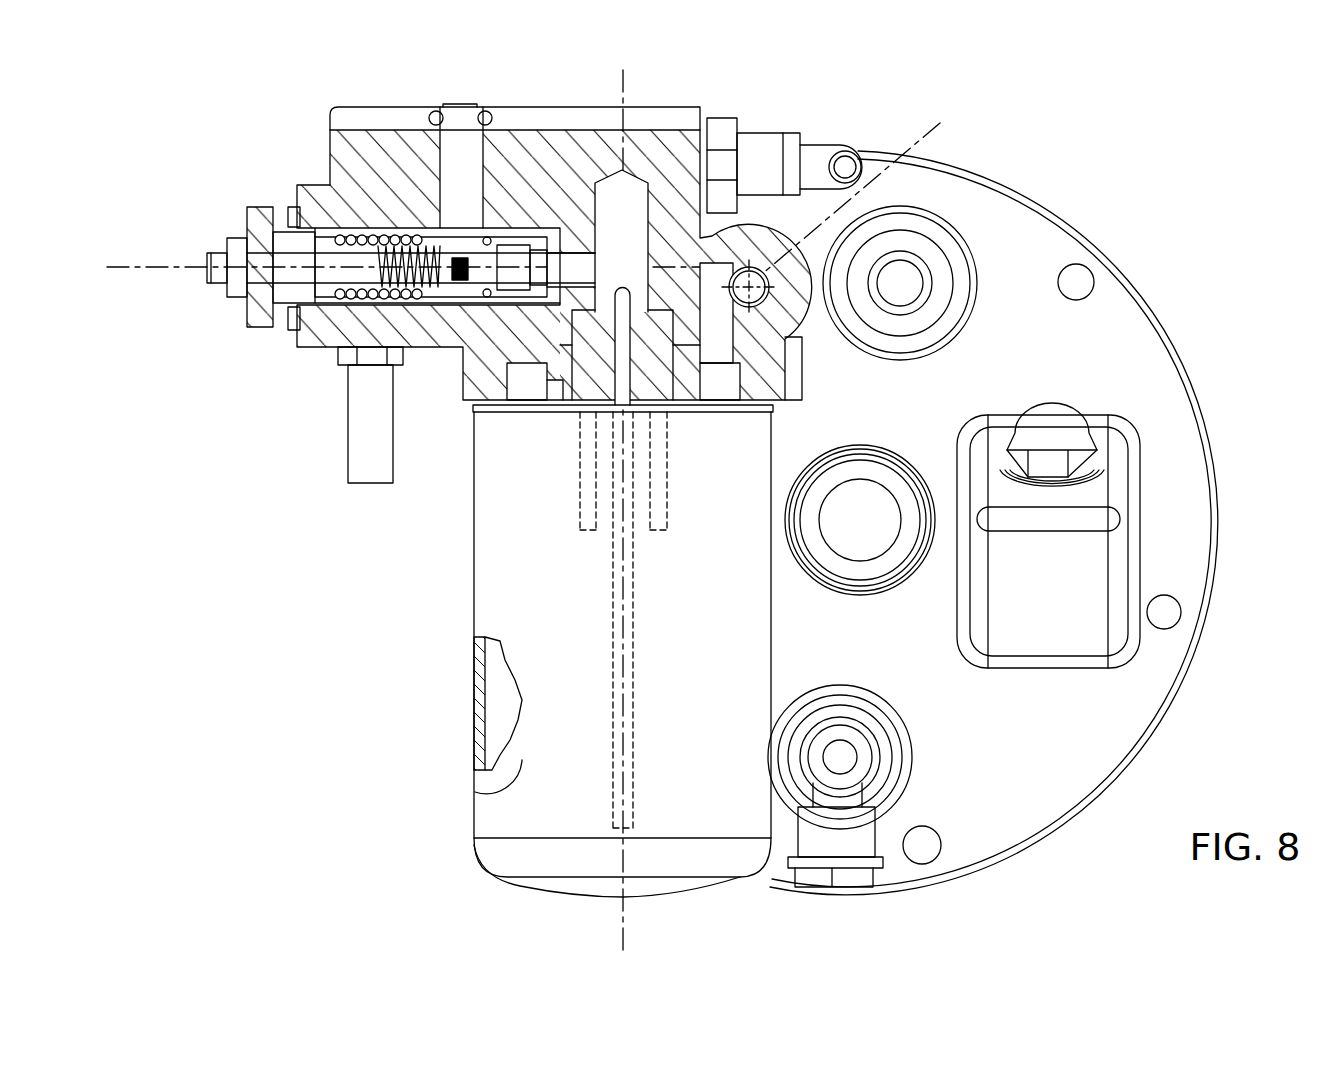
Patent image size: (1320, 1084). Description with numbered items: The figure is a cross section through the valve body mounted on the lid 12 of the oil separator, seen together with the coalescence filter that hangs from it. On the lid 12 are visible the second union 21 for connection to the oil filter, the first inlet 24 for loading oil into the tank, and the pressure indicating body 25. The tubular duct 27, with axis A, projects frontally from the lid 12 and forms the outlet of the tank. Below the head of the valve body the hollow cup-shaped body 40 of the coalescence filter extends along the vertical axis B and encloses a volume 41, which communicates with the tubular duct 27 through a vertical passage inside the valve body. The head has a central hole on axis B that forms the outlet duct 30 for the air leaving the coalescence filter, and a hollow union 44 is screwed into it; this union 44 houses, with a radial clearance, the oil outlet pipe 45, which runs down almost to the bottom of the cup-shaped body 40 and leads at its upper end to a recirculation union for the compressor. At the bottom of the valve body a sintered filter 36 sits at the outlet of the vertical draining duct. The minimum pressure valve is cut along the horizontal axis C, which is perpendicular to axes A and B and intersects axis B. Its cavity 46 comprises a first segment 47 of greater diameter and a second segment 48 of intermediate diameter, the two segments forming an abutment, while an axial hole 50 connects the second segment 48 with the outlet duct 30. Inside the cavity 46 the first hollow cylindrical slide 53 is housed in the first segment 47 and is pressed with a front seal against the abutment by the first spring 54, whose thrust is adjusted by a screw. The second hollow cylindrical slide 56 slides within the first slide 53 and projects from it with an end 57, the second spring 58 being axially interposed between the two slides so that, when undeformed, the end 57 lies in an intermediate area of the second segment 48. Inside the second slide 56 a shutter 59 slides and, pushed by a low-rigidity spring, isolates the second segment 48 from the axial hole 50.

The lid 12 is at (1208, 398).
The second union 21 is at (887, 767).
The first inlet 24 is at (1113, 550).
The pressure indicating body 25 is at (890, 483).
The tubular duct 27 is at (766, 240).
The outlet duct 30 is at (655, 188).
The sintered filter 36 is at (353, 467).
The hollow cup-shaped body 40 is at (497, 618).
The volume 41 is at (475, 792).
The hollow union 44 is at (570, 407).
The oil outlet pipe 45 is at (607, 405).
The cavity 46 is at (287, 318).
The first segment 47 is at (434, 254).
The second segment 48 is at (545, 240).
The axial hole 50 is at (597, 170).
The first hollow cylindrical slide 53 is at (420, 303).
The first spring 54 is at (383, 232).
The second hollow cylindrical slide 56 is at (497, 297).
The end 57 is at (516, 243).
The second spring 58 is at (402, 236).
The shutter 59 is at (497, 232).
The axis A is at (922, 142).
The axis B is at (635, 88).
The axis C is at (132, 278).